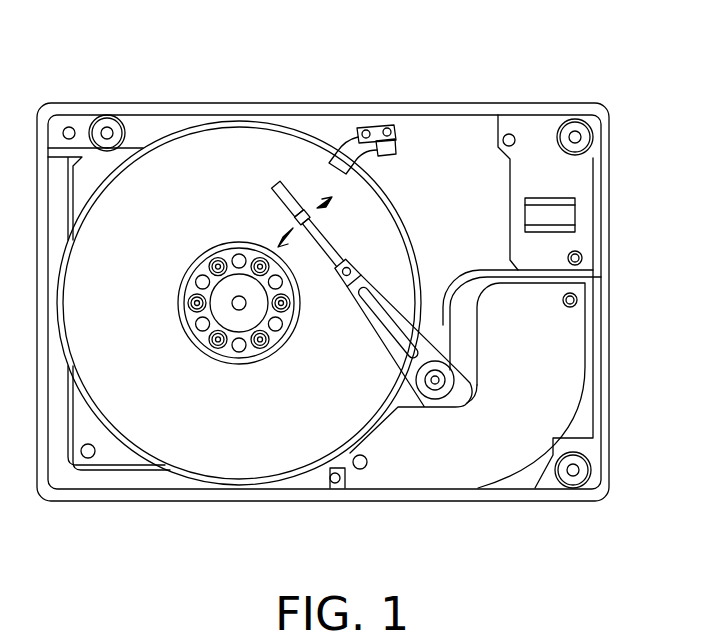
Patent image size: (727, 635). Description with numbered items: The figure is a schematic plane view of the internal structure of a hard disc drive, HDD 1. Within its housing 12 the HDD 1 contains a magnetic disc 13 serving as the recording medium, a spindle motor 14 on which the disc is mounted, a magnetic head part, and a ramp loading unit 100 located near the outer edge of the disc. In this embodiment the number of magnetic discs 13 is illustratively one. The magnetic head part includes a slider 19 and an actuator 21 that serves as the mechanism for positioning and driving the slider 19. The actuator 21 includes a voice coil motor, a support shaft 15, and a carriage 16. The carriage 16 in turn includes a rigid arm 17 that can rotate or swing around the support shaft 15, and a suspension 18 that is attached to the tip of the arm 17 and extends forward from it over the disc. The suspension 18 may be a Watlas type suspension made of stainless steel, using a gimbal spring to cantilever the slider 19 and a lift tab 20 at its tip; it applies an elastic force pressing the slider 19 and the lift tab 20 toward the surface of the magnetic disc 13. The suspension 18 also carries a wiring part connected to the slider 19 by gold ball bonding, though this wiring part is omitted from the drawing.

The HDD 1 is at (330, 74).
The housing 12 is at (243, 500).
The magnetic disc 13 is at (402, 226).
The spindle motor 14 is at (212, 312).
The support shaft 15 is at (437, 382).
The carriage 16 is at (346, 312).
The arm 17 is at (372, 328).
The suspension 18 is at (327, 233).
The slider 19 is at (300, 218).
The lift tab 20 is at (280, 183).
The actuator 21 is at (526, 480).
The ramp loading unit 100 is at (405, 131).